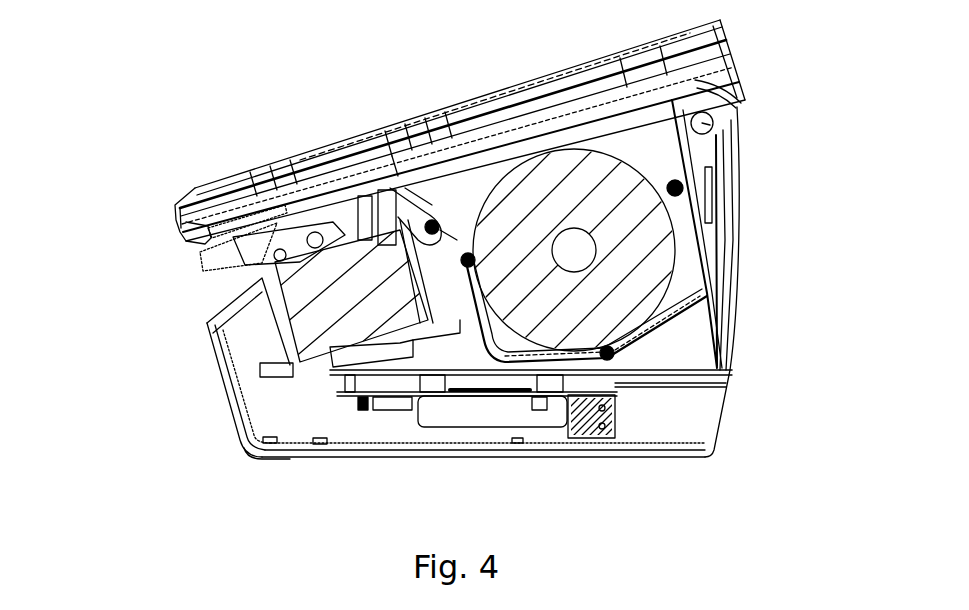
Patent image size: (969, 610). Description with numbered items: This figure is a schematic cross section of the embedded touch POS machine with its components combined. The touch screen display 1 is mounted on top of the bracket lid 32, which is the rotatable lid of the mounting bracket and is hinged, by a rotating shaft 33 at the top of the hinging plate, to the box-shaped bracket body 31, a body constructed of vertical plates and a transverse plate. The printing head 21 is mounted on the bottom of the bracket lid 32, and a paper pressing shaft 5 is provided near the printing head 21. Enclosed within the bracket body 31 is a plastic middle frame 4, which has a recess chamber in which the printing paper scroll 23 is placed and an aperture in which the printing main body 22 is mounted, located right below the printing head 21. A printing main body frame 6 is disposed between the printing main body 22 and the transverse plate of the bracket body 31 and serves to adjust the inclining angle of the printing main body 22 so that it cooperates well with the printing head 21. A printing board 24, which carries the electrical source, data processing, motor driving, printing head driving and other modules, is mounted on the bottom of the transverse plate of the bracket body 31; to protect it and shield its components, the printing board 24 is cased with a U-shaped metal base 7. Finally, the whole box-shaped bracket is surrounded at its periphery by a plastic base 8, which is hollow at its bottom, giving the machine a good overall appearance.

The touch screen display 1 is at (527, 87).
The printing head 21 is at (178, 222).
The paper pressing shaft 5 is at (387, 187).
The bracket lid 32 is at (698, 80).
The rotating shaft 33 is at (712, 124).
The printing paper scroll 23 is at (617, 282).
The plastic middle frame 4 is at (697, 300).
The box-shaped bracket body 31 is at (727, 372).
The printing main body 22 is at (302, 327).
The printing main body frame 6 is at (257, 393).
The U-shaped metal base 7 is at (363, 445).
The plastic base 8 is at (257, 458).
The printing board 24 is at (580, 410).